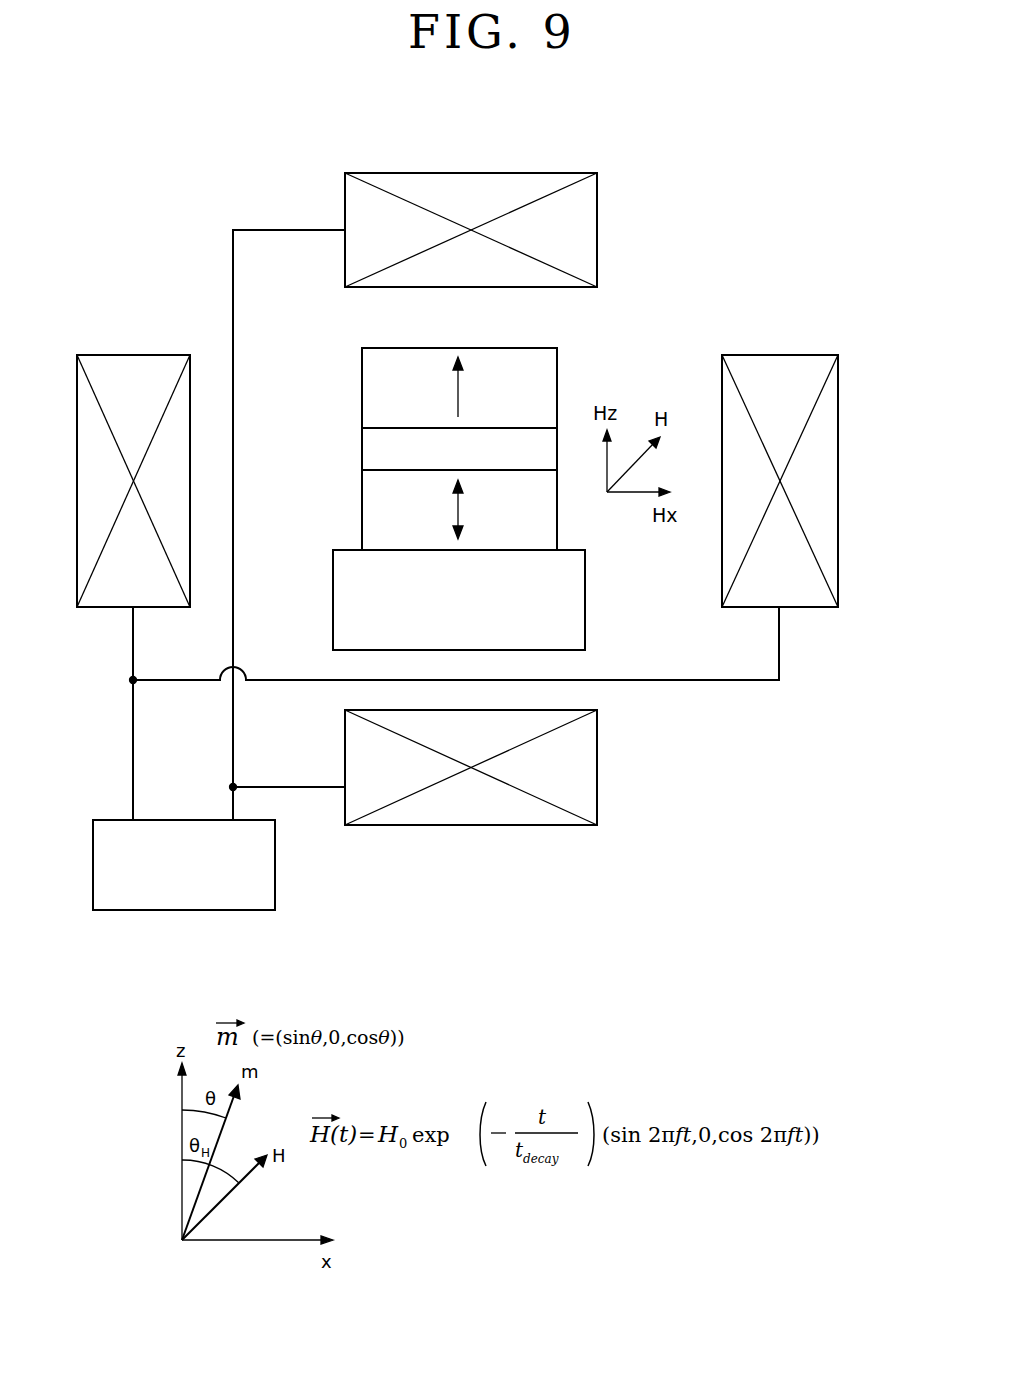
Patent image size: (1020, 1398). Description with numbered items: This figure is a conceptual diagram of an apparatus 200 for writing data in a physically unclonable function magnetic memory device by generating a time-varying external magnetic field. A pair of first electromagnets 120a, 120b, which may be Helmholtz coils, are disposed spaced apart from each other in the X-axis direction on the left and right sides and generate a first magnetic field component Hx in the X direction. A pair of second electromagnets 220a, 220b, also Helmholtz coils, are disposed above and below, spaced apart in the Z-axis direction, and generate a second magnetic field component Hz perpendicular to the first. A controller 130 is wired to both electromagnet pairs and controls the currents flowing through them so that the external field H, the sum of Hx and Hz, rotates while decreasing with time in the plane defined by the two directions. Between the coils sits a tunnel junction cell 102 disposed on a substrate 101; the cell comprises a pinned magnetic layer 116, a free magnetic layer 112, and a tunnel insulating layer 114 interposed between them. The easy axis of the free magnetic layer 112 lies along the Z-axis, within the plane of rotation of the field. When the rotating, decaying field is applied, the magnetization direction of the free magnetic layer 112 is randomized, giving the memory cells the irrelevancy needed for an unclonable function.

The apparatus 200 is at (285, 140).
The second electromagnet 220a is at (345, 192).
The second electromagnet 220b is at (345, 736).
The first electromagnet 120a is at (133, 355).
The first electromagnet 120b is at (779, 355).
The tunnel junction cell 102 is at (356, 346).
The pinned magnetic layer 116 is at (362, 387).
The tunnel barrier layer 114 is at (362, 449).
The free magnetic layer 112 is at (362, 509).
The substrate 101 is at (333, 600).
The controller 130 is at (183, 911).